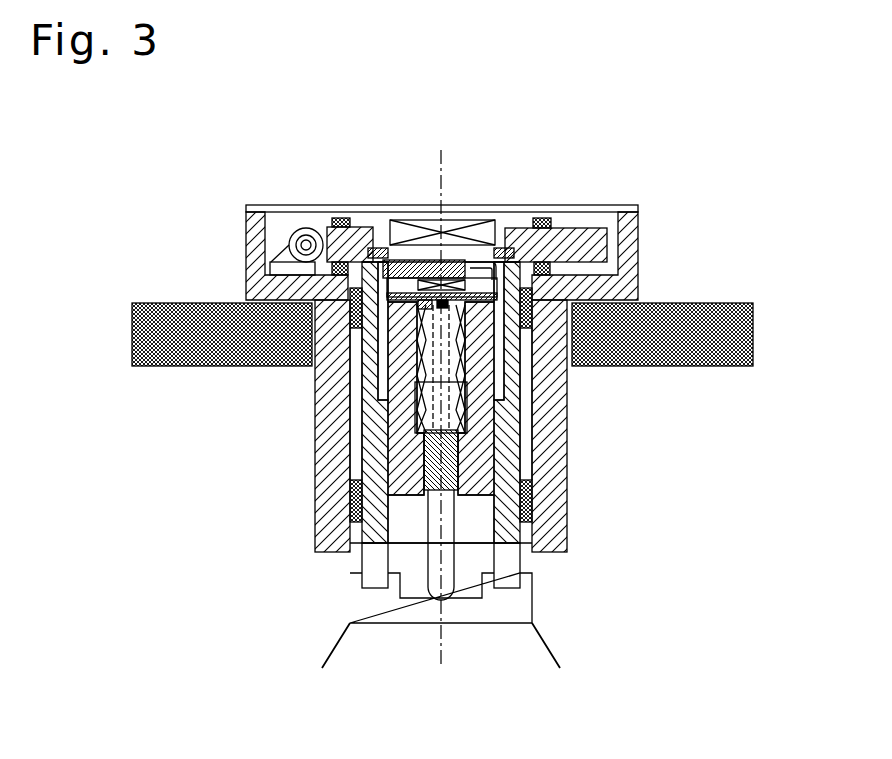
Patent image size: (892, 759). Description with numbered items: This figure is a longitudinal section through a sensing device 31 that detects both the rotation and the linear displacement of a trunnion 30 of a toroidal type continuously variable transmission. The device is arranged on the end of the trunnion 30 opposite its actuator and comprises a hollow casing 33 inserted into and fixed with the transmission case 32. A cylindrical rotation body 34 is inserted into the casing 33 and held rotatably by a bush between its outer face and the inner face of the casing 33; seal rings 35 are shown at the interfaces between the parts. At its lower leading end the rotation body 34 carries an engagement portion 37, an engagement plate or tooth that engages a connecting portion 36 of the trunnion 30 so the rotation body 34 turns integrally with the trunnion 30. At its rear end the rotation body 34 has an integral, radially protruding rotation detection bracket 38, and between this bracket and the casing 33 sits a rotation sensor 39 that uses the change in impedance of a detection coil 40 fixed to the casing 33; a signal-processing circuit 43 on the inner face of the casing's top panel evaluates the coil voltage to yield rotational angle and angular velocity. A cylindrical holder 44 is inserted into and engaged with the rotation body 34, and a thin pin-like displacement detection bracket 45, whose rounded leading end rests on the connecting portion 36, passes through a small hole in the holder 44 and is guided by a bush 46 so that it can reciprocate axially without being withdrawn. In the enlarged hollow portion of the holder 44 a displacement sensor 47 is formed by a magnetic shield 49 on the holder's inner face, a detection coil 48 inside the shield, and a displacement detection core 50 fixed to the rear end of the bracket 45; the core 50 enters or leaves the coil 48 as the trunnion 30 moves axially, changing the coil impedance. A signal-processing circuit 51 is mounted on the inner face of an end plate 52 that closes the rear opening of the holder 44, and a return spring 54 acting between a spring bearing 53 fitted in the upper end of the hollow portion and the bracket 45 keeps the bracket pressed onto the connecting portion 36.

The trunnion 30 is at (530, 640).
The sensing device 31 is at (646, 222).
The transmission case 32 is at (718, 318).
The casing 33 is at (567, 488).
The rotation body 34 is at (467, 437).
The seal ring 35 is at (546, 226).
The connecting portion 36 is at (352, 603).
The engagement portion 37 is at (375, 562).
The rotation detection bracket 38 is at (589, 250).
The rotation sensor 39 is at (303, 228).
The detection coil 40 is at (291, 240).
The signal-processing circuit 43 is at (473, 232).
The holder 44 is at (400, 447).
The displacement detection bracket 45 is at (437, 588).
The bush 46 is at (415, 478).
The displacement sensor 47 is at (557, 369).
The detection coil 48 is at (465, 390).
The magnetic shield 49 is at (456, 468).
The displacement detection core 50 is at (455, 420).
The signal-processing circuit 51 is at (385, 272).
The end plate 52 is at (415, 268).
The spring bearing 53 is at (445, 335).
The return spring 54 is at (398, 400).